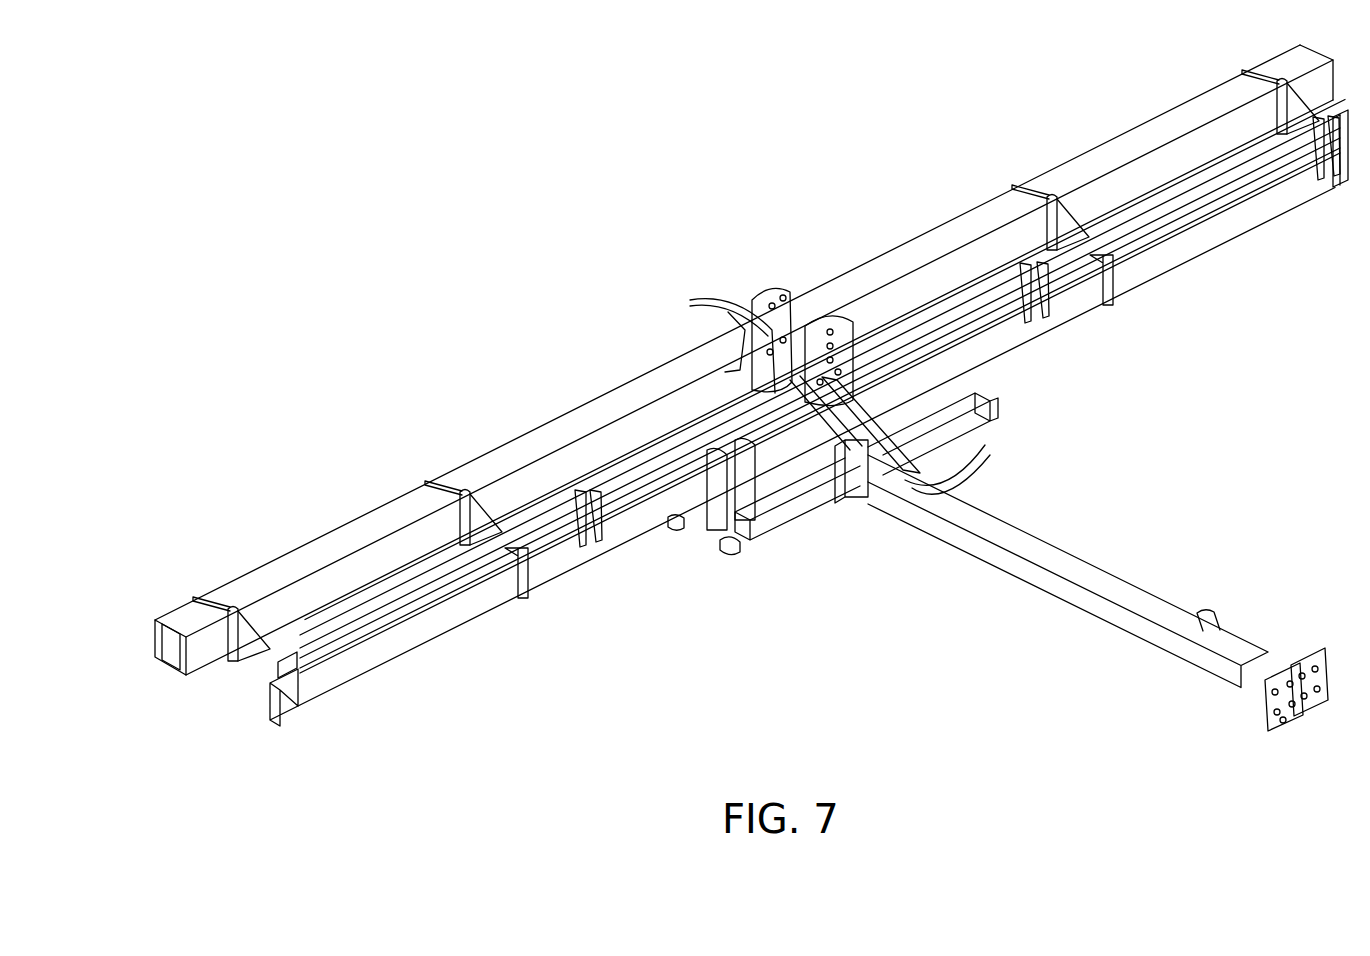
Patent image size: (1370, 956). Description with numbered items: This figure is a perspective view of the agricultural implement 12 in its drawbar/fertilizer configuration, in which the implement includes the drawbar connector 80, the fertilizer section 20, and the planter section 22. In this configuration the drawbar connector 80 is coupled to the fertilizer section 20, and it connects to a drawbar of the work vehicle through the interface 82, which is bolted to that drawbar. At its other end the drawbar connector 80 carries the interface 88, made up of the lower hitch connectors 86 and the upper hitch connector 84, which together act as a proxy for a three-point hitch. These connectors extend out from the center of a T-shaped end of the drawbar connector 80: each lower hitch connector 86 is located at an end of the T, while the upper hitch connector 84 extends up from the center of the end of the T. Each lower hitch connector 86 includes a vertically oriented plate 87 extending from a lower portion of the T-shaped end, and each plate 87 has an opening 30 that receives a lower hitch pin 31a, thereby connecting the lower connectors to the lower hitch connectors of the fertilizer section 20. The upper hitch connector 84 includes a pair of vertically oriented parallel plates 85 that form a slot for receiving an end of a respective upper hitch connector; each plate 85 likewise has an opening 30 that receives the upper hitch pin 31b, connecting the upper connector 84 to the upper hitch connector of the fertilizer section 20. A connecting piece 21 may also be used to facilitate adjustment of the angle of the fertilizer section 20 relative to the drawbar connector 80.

The agricultural implement 12 is at (751, 408).
The fertilizer section 20 is at (434, 674).
The connecting piece 21 is at (760, 398).
The planter section 22 is at (336, 506).
The opening 30 is at (788, 293).
The lower hitch pin 31a is at (727, 546).
The upper hitch pin 31b is at (760, 325).
The drawbar connector 80 is at (1098, 655).
The interface 82 is at (1268, 729).
The upper hitch connector 84 is at (834, 428).
The parallel plates 85 is at (870, 472).
The lower hitch connectors 86 is at (745, 578).
The plate 87 is at (942, 460).
The interface 88 is at (957, 527).